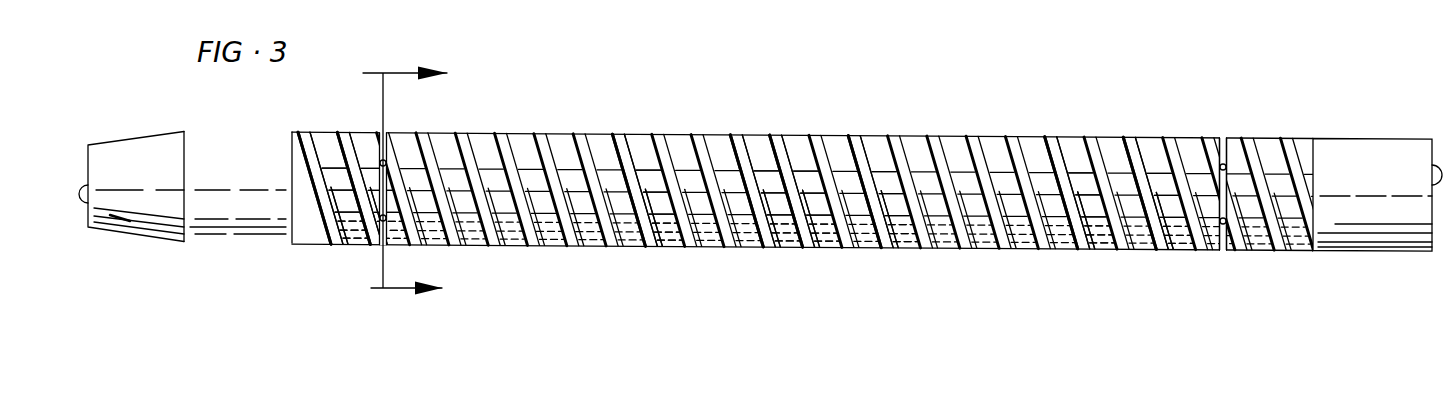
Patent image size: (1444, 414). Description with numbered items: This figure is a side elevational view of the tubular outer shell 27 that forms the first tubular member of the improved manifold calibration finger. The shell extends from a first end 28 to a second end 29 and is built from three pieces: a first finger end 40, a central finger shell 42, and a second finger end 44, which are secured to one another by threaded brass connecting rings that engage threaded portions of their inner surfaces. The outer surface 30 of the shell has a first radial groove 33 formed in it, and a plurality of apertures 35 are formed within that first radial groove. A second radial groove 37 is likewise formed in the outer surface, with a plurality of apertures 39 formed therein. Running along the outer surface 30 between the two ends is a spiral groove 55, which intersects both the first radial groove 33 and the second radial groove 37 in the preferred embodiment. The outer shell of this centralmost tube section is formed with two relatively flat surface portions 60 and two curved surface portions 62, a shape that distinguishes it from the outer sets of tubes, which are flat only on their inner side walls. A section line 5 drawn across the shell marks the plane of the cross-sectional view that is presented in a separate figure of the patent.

The section line 5- 5 is at (395, 182).
The tubular outer shell 27 is at (860, 203).
The first end 28 is at (114, 222).
The second end 29 is at (1427, 183).
The outer surface 30 is at (650, 223).
The first radial groove 33 is at (383, 246).
The apertures 35 is at (347, 131).
The second radial groove 37 is at (1225, 253).
The apertures 39 is at (1225, 138).
The first finger end 40 is at (223, 207).
The finger shell 42 is at (774, 247).
The second finger end 44 is at (1385, 253).
The spiral groove 55 is at (1123, 231).
The flat surface portions 60 is at (620, 176).
The curved surface portions 62 is at (758, 144).